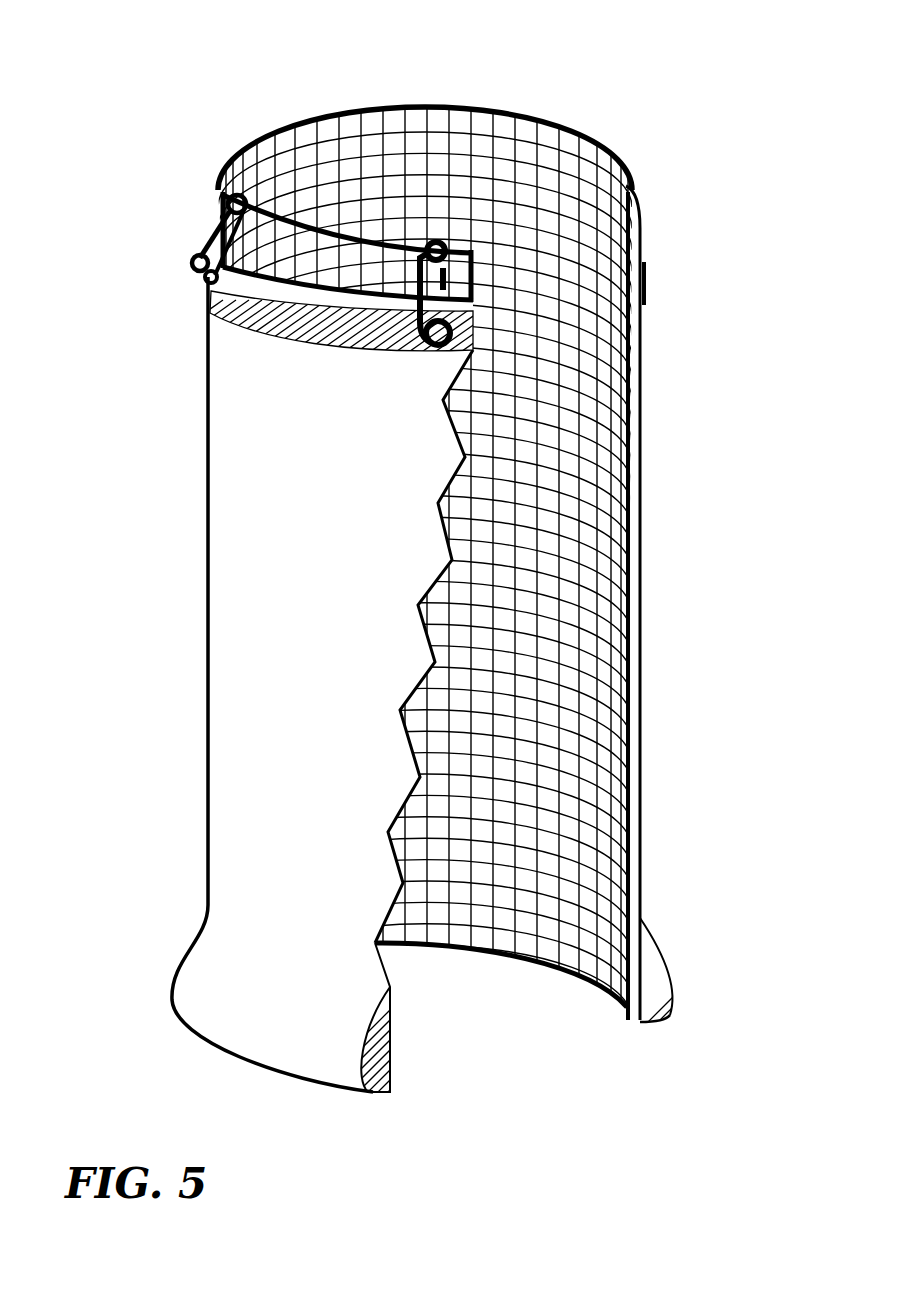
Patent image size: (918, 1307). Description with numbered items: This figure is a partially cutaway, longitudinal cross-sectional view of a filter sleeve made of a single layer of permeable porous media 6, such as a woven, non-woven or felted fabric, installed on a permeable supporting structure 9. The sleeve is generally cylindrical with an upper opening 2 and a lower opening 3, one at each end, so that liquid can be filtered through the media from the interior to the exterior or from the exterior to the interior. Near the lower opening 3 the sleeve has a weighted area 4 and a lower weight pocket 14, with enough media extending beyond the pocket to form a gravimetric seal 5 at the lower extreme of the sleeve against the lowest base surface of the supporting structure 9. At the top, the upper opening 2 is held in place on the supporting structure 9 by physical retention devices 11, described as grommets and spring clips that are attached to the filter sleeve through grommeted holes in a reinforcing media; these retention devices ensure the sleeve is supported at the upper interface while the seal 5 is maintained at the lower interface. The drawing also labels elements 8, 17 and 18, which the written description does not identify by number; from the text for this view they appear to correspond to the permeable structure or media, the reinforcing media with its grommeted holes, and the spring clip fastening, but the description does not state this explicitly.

The opening 2 is at (437, 197).
The opening 3 is at (437, 806).
The weighted area 4 is at (193, 987).
The gravimetric seal 5 is at (663, 1020).
The porous media 6 is at (640, 477).
The mesh 8 is at (568, 640).
The supporting structure 9 is at (296, 126).
The physical retention devices 11 is at (203, 221).
The weight pocket 14 is at (653, 980).
The fastening strip 17 is at (645, 285).
The clip ring 18 is at (440, 350).